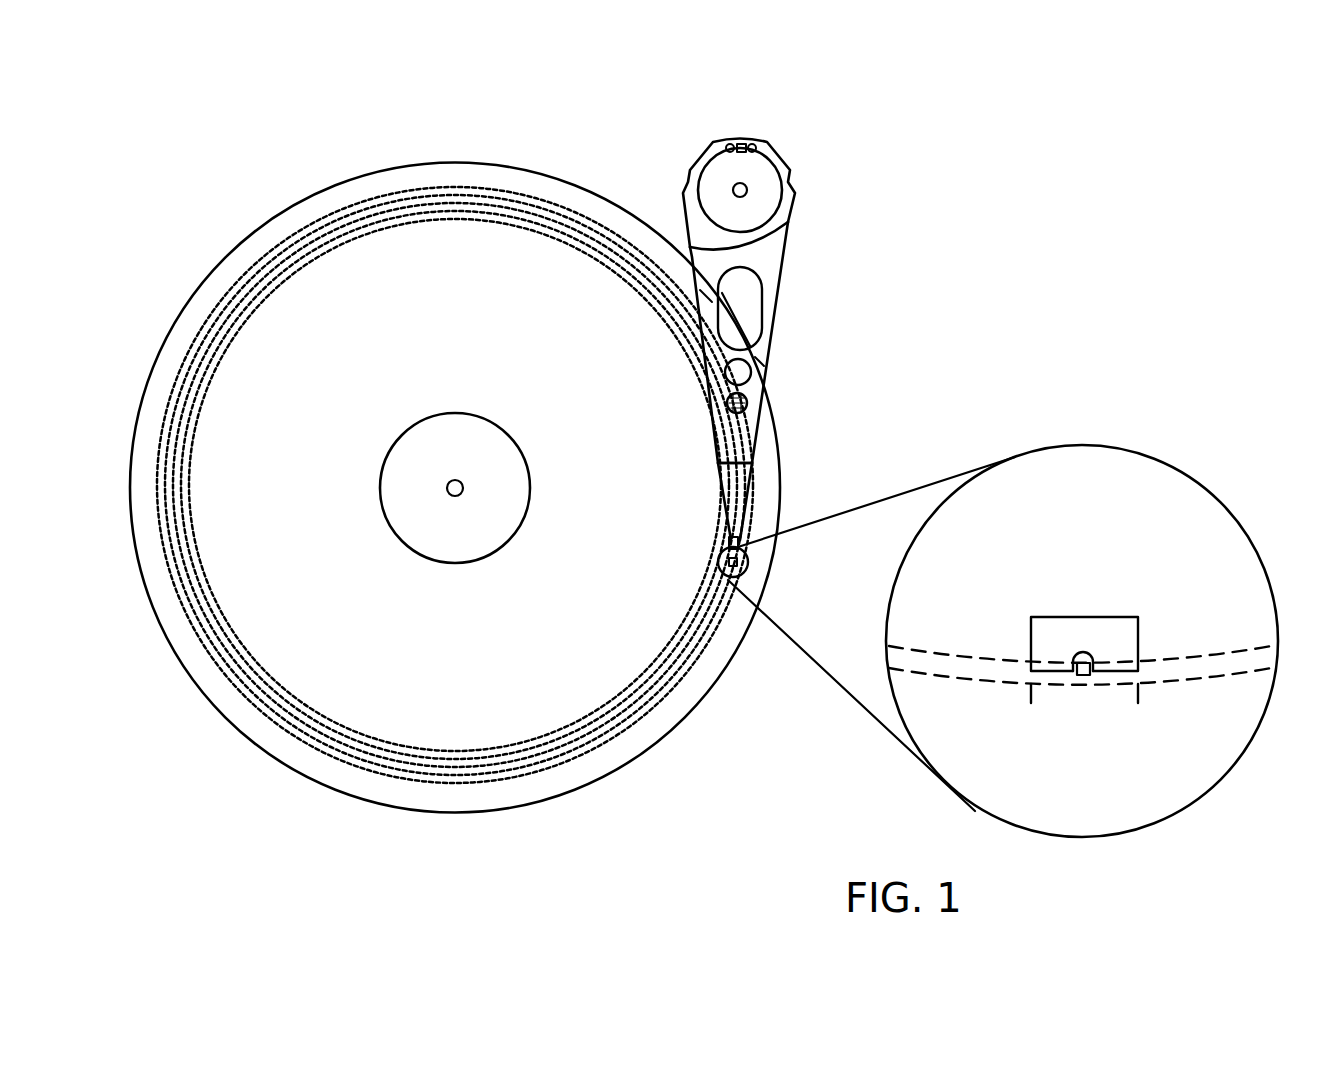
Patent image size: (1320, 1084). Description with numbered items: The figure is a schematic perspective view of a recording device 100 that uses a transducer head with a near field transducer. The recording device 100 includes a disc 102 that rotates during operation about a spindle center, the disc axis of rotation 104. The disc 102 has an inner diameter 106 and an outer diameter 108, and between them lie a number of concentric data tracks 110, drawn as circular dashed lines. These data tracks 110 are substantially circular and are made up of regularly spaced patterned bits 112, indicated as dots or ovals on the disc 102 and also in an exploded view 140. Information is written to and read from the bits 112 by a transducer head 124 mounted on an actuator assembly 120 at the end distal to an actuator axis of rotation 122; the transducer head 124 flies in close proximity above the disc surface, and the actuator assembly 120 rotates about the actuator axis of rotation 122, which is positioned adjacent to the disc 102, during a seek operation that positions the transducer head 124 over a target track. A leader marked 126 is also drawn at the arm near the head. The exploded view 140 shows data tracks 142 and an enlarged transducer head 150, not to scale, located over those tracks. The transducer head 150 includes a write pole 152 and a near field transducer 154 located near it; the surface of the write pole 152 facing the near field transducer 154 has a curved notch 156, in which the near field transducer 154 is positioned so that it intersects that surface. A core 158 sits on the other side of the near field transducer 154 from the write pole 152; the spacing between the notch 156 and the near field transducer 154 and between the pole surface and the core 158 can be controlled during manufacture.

The recording device 100 is at (198, 134).
The disc 102 is at (527, 167).
The disc axis of rotation 104 is at (447, 485).
The inner diameter 106 is at (422, 419).
The outer diameter 108 is at (335, 212).
The data tracks 110 is at (431, 511).
The patterned bits 112 is at (287, 717).
The actuator assembly 120 is at (804, 340).
The actuator axis of rotation 122 is at (750, 188).
The transducer head 124 is at (718, 562).
The suspension 126 is at (720, 488).
The exploded view 140 is at (1166, 822).
The data tracks 142 is at (1162, 698).
The transducer head 150 is at (1017, 655).
The write pole 152 is at (1016, 624).
The near field transducer 154 is at (1068, 683).
The notch 156 is at (1094, 640).
The core 158 is at (1112, 707).